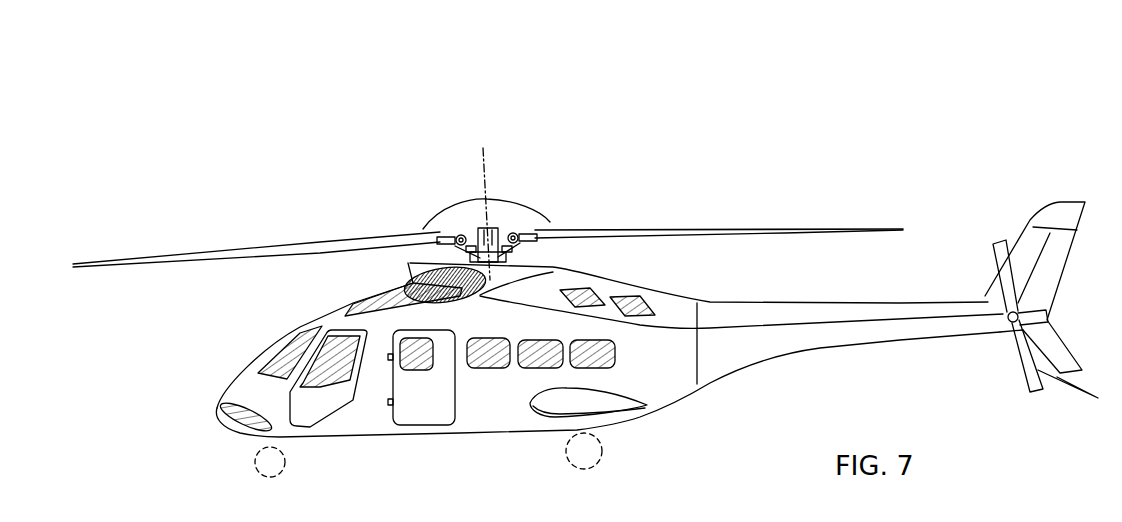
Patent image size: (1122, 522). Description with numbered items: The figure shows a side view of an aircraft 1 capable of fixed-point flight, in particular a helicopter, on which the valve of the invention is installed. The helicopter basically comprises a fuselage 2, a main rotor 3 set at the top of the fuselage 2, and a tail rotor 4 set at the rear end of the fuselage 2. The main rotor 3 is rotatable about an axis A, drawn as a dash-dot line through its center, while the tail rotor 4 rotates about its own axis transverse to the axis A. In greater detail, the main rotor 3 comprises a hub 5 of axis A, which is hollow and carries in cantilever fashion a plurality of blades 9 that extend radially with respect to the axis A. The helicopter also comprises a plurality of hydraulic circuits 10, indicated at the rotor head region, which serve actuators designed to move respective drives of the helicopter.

The aircraft 1 is at (637, 128).
The fuselage 2 is at (822, 338).
The main rotor 3 is at (512, 186).
The tail rotor 4 is at (993, 250).
The hub 5 is at (495, 227).
The blades 9 is at (197, 253).
The hydraulic circuits 10 is at (535, 201).
The axis A is at (480, 175).